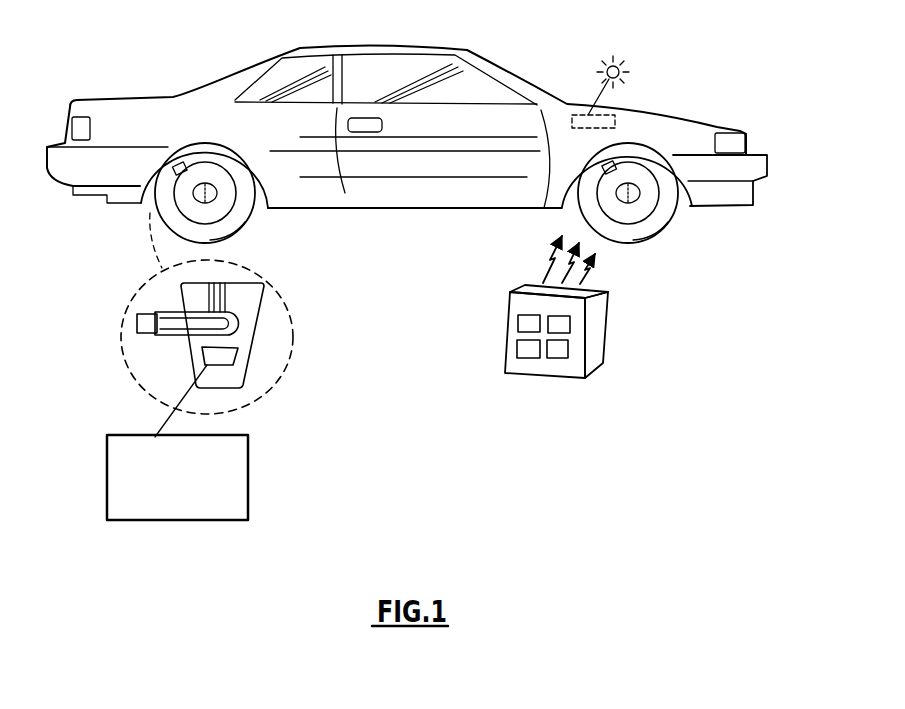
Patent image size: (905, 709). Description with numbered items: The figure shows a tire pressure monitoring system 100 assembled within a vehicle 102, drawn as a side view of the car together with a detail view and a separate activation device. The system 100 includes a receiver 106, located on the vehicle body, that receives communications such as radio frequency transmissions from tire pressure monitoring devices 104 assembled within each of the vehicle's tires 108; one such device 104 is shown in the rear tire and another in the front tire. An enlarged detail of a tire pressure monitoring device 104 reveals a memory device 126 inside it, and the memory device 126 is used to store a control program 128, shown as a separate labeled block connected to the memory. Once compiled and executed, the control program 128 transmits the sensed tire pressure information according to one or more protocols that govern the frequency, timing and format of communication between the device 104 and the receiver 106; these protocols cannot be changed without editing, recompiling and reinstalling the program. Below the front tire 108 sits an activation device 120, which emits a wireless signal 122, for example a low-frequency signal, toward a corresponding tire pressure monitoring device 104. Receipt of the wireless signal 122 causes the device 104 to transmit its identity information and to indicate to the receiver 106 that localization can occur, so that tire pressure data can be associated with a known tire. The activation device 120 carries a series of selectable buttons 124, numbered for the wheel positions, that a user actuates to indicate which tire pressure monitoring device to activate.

The tire pressure monitoring system 100 is at (424, 208).
The vehicle 102 is at (297, 50).
The tire pressure monitoring device 104 is at (178, 165).
The receiver 106 is at (627, 117).
The tire 108 is at (237, 212).
The activation device 120 is at (573, 366).
The wireless signal 122 is at (625, 272).
The selectable buttons 124 is at (515, 372).
The memory device 126 is at (220, 355).
The control program 128 is at (170, 520).